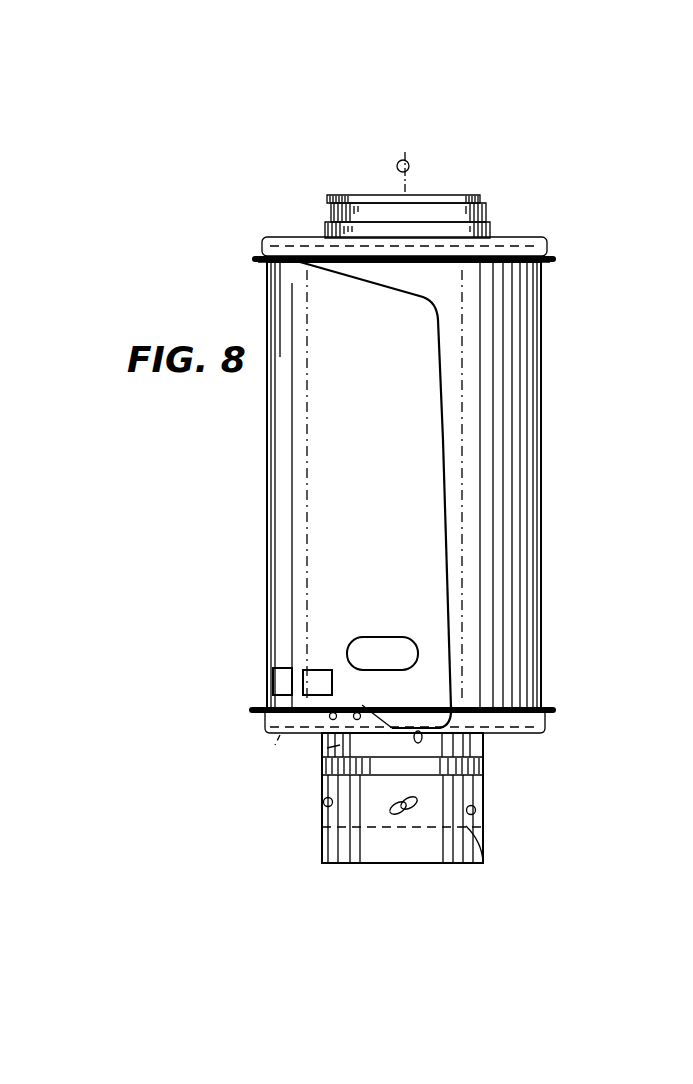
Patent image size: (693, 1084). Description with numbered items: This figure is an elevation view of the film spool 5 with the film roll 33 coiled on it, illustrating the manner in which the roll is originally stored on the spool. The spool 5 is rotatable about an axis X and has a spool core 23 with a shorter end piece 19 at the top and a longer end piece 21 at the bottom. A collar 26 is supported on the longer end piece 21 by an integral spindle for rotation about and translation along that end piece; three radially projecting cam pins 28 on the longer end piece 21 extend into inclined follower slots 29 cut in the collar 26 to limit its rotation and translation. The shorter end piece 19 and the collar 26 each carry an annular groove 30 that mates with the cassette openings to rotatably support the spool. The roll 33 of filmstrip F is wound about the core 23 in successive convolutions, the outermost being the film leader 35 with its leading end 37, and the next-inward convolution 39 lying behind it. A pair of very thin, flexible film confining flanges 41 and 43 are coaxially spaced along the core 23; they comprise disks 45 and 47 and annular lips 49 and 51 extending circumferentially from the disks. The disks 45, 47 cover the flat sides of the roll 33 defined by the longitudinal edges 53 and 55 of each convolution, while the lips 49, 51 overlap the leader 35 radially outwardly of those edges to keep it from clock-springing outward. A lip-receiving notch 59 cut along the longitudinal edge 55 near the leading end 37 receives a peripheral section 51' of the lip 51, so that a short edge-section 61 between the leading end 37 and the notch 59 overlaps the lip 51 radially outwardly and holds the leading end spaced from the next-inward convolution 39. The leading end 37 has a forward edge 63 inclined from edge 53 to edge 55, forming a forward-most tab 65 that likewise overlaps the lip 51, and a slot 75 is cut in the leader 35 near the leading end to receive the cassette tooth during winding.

The film spool 5 is at (243, 537).
The shorter end piece 19 is at (484, 194).
The longer end piece 21 is at (323, 837).
The spool core 23 is at (322, 197).
The collar 26 is at (503, 843).
The cam pins 28 is at (324, 802).
The follower slots 29 is at (325, 808).
The annular groove 30 is at (338, 208).
The film roll 33 is at (254, 490).
The film leader 35 is at (267, 448).
The leading end 37 is at (423, 530).
The next-inward convolution 39 is at (483, 423).
The upper film confining flange 41 is at (255, 245).
The lower film confining flange 43 is at (246, 732).
The disk 45 is at (530, 237).
The disk 47 is at (270, 742).
The annular lip 49 is at (258, 256).
The annular lip 51 is at (250, 732).
The peripheral section of annular lip 51' is at (307, 757).
The longitudinal edge 53 is at (283, 242).
The longitudinal edge 55 is at (267, 770).
The lip-receiving notch 59 is at (360, 703).
The edge-section 61 is at (416, 732).
The forward edge 63 is at (442, 441).
The tab 65 is at (432, 718).
The slot 75 is at (383, 637).
The filmstrip F is at (292, 587).
The axis X is at (409, 166).